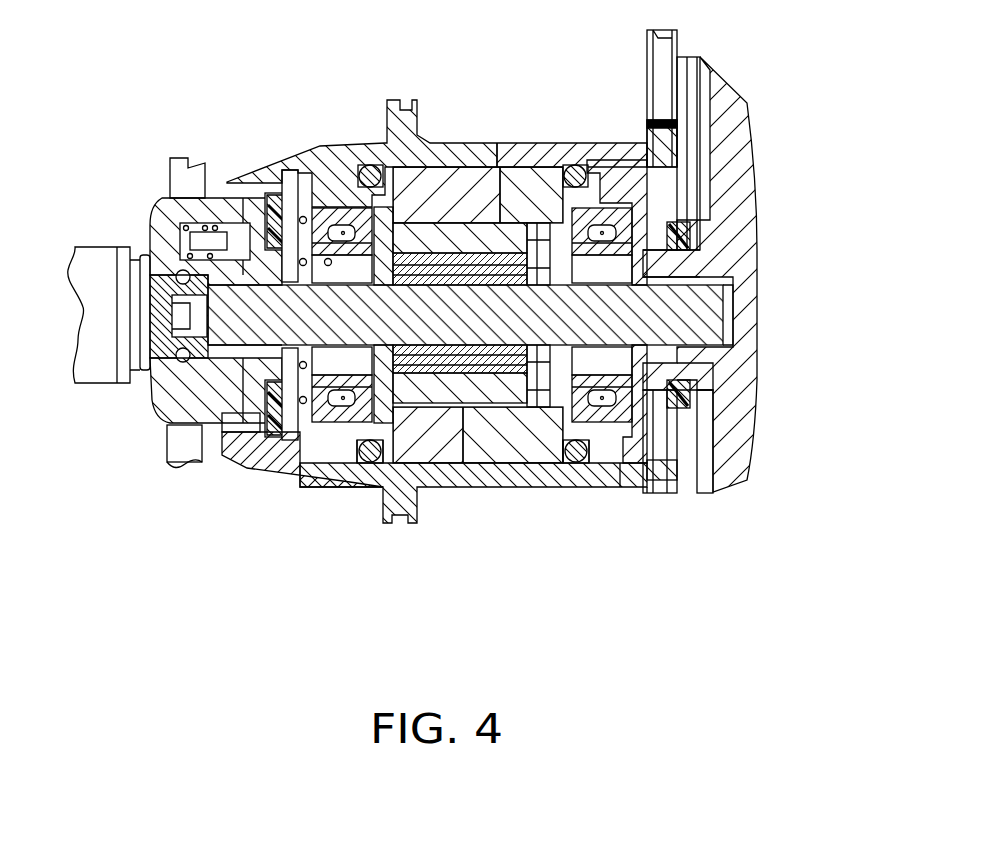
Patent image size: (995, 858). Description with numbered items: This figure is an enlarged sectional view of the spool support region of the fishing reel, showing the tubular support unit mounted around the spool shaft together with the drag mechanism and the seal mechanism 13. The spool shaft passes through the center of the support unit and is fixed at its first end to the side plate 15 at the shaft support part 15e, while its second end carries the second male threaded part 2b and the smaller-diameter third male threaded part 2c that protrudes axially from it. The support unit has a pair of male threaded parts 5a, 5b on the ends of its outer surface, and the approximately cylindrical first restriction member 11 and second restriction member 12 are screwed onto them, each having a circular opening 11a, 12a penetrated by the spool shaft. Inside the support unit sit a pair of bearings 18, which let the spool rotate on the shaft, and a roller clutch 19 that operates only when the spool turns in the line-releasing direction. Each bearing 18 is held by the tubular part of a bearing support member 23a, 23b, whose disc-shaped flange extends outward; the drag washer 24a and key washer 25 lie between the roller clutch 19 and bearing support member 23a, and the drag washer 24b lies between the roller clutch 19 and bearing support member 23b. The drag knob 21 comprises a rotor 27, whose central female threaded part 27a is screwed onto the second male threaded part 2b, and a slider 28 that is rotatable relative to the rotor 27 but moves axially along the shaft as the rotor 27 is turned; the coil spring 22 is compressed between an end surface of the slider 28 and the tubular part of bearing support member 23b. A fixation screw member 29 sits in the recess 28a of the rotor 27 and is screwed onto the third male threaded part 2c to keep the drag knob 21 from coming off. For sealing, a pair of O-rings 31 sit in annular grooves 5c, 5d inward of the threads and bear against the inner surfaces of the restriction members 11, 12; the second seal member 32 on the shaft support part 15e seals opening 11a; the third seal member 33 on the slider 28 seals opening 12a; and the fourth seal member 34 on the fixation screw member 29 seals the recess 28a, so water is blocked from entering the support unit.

The second male threaded part 2b is at (180, 464).
The third male threaded part 2c is at (135, 382).
The male threaded part 5a is at (645, 480).
The male threaded part 5b is at (337, 477).
The annular groove 5c is at (580, 465).
The annular groove 5d is at (365, 462).
The first restriction member 11 is at (633, 117).
The circular opening 11a is at (700, 388).
The second restriction member 12 is at (258, 462).
The circular opening 12a is at (235, 432).
The seal mechanism 13 is at (593, 150).
The side plate 15 is at (758, 320).
The shaft support part 15e is at (693, 265).
The bearing 18 is at (338, 210).
The roller clutch 19 is at (467, 385).
The drag knob 21 is at (147, 220).
The coil spring 22 is at (300, 215).
The bearing support member 23a is at (563, 157).
The bearing support member 23b is at (400, 185).
The drag washer 24a is at (540, 375).
The drag washer 24b is at (380, 440).
The key washer 25 is at (533, 197).
The rotor 27 is at (178, 212).
The female threaded part 27a is at (178, 205).
The slider 28 is at (247, 200).
The recess 28a is at (148, 337).
The fixation screw member 29 is at (168, 293).
The O-ring 31 is at (372, 165).
The second seal member 32 is at (672, 232).
The third seal member 33 is at (275, 195).
The fourth seal member 34 is at (158, 402).